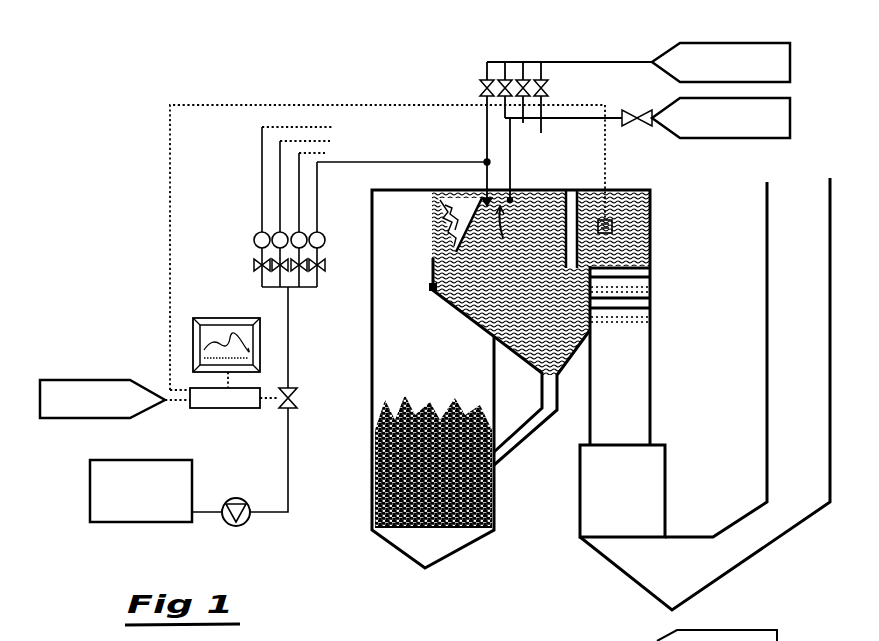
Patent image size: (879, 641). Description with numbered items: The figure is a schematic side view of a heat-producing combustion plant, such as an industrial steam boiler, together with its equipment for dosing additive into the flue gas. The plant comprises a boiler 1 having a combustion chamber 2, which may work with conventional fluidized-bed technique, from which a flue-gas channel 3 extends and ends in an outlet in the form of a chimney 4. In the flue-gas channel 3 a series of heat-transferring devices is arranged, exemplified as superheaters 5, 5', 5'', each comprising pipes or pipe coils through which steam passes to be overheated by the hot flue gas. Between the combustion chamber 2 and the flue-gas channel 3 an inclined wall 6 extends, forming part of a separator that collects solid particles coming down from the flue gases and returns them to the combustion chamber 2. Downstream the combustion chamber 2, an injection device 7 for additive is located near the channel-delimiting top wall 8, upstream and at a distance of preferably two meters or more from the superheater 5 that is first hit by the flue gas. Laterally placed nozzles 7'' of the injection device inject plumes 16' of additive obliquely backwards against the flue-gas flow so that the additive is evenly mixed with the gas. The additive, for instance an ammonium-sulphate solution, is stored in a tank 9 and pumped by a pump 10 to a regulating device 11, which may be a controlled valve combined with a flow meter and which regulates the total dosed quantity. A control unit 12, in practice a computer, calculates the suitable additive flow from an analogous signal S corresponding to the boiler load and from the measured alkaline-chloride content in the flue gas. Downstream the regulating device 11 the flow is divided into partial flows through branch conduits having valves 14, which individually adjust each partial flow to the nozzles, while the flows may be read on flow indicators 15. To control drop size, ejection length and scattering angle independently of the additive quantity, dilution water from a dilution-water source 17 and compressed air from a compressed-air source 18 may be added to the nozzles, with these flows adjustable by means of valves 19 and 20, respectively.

The boiler 1 is at (375, 545).
The combustion chamber 2 is at (380, 467).
The flue-gas channel 3 is at (620, 190).
The chimney 4 is at (780, 386).
The superheater 5 is at (569, 202).
The superheater 5' is at (646, 279).
The superheater 5'' is at (642, 333).
The inclined wall 6 is at (470, 318).
The injection device 7 is at (505, 235).
The nozzle 7'' is at (472, 134).
The top wall 8 is at (525, 190).
The tank 9 is at (102, 497).
The pump 10 is at (240, 498).
The regulating device 11 is at (298, 396).
The control unit 12 is at (215, 407).
The valves 14 is at (255, 262).
The flow indicators 15 is at (300, 240).
The plume 16' is at (424, 225).
The dilution-water source 17 is at (743, 62).
The compressed-air source 18 is at (743, 118).
The valves 19 is at (527, 76).
The valve 20 is at (634, 112).
The analogous signal S is at (90, 378).